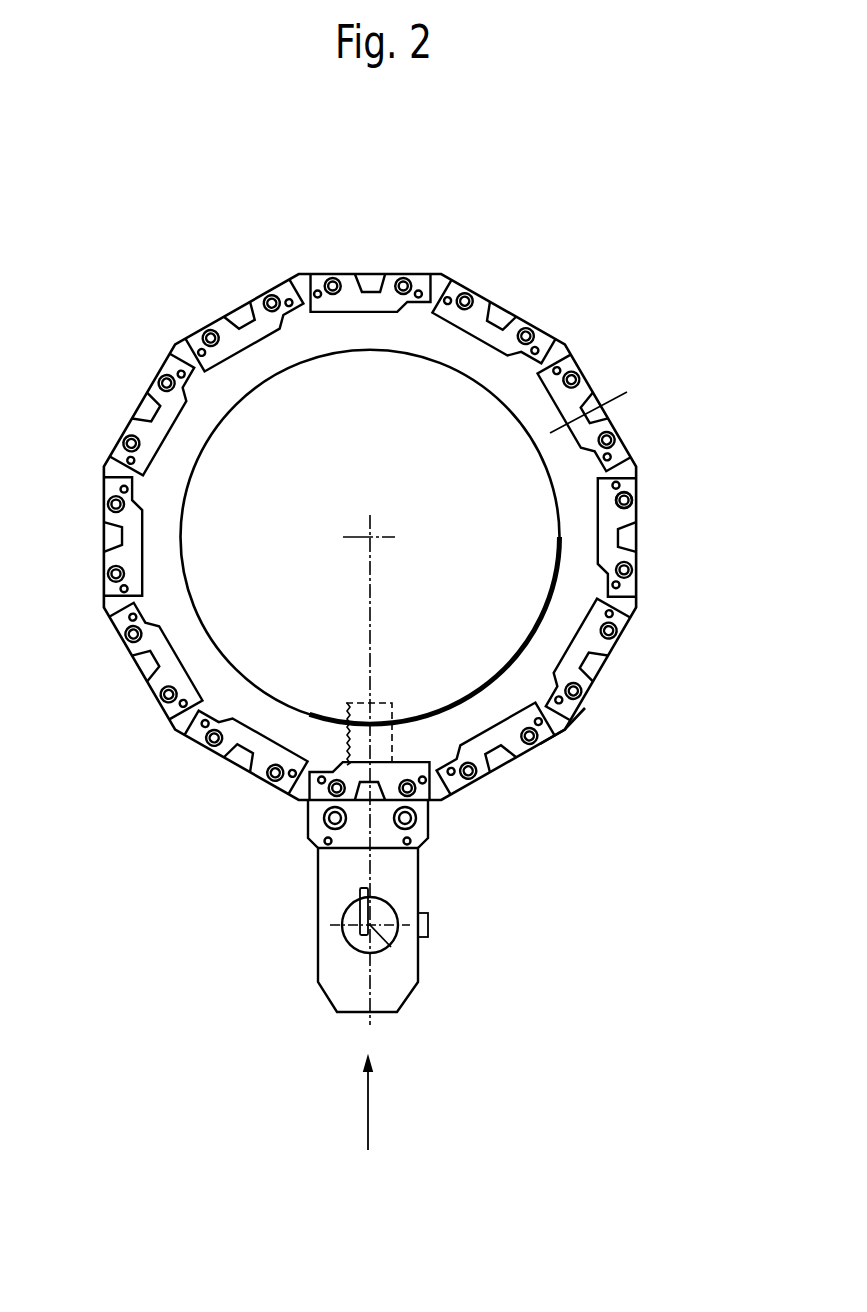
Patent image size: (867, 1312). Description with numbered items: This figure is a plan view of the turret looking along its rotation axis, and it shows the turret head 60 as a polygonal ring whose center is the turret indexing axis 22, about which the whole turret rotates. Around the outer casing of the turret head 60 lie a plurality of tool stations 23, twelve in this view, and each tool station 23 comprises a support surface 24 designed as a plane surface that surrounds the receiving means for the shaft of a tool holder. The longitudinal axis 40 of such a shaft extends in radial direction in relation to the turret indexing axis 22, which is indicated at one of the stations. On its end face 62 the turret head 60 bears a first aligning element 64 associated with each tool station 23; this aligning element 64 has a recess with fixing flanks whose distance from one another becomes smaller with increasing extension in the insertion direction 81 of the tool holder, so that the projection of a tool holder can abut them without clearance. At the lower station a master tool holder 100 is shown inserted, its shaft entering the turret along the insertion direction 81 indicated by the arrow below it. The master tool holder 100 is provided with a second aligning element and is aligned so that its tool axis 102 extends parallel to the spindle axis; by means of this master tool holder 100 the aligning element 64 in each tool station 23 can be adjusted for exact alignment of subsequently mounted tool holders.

The turret indexing axis 22 is at (372, 541).
The tool station 23 is at (368, 258).
The support surface 24 is at (525, 317).
The longitudinal axis 40 is at (620, 378).
The turret head 60 is at (577, 602).
The end face 62 is at (507, 688).
The first aligning element 64 is at (610, 522).
The insertion direction 81 is at (370, 1127).
The master tool holder 100 is at (290, 962).
The tool axis 102 is at (387, 943).